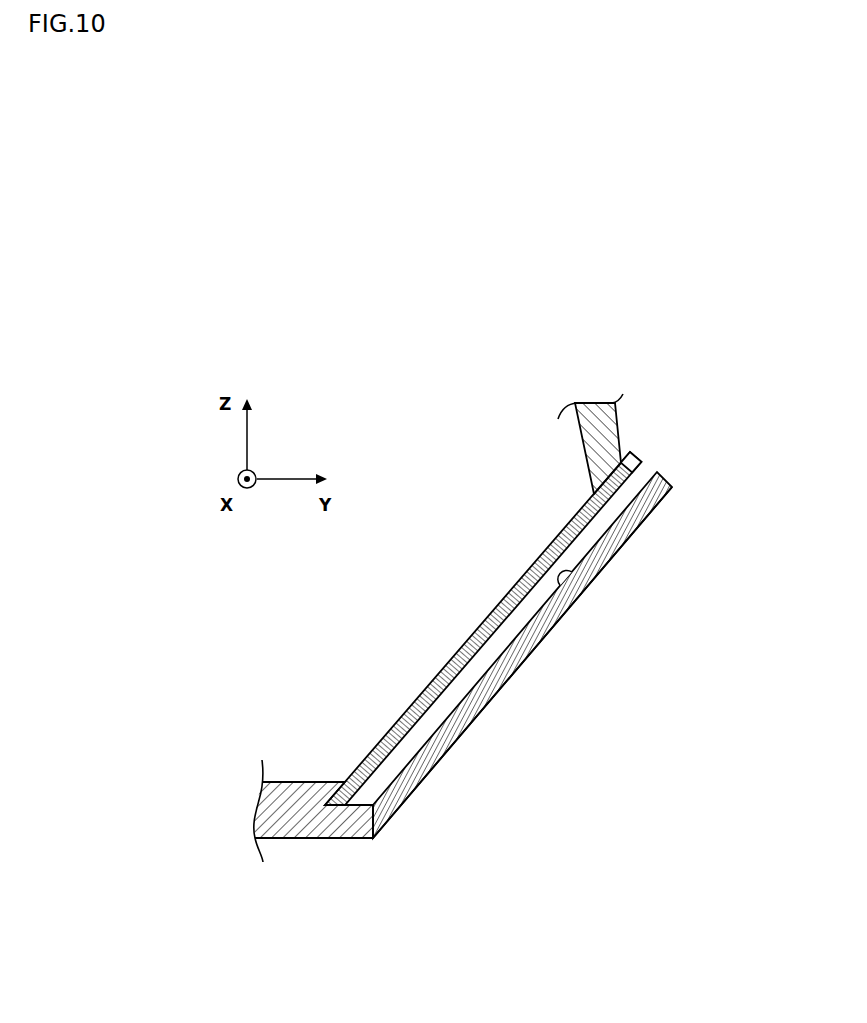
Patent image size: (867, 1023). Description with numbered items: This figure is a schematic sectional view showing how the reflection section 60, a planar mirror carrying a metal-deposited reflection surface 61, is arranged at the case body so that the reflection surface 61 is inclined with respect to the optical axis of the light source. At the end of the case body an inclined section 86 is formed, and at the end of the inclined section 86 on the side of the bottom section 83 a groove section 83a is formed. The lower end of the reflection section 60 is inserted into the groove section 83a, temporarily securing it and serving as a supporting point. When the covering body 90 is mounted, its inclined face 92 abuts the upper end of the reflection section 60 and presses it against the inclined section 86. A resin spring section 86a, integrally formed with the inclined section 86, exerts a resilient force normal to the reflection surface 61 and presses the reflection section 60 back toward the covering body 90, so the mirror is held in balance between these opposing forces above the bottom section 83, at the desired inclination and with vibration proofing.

The reflection section 60 is at (463, 715).
The reflection surface 61 is at (440, 690).
The bottom section 83 is at (292, 790).
The groove section 83a is at (371, 790).
The inclined section 86 is at (513, 665).
The resin spring section 86a is at (573, 575).
The covering body 90 is at (593, 432).
The inclined face 92 is at (638, 462).